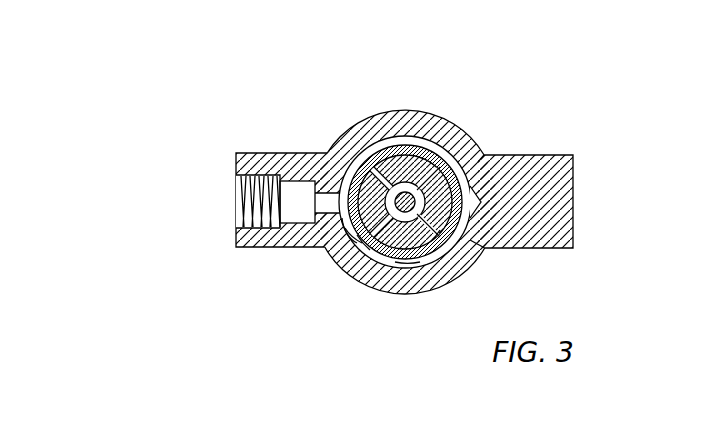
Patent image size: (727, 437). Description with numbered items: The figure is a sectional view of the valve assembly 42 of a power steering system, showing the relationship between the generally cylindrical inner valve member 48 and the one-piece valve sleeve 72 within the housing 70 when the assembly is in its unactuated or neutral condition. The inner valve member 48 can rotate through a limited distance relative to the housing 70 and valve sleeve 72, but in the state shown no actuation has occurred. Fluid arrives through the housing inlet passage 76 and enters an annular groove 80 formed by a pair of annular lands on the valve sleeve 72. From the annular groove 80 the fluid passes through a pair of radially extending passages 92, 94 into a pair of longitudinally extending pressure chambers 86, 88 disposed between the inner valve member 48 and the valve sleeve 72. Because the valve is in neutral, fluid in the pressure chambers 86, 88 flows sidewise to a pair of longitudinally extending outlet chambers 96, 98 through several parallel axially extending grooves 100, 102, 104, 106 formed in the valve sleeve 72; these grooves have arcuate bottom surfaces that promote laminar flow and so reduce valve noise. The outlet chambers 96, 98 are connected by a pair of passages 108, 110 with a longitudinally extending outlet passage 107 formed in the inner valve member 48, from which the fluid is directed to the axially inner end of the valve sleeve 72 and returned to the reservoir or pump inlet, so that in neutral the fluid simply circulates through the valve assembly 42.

The valve assembly 42 is at (173, 312).
The inner valve member 48 is at (407, 263).
The housing 70 is at (573, 232).
The valve sleeve 72 is at (461, 161).
The housing inlet passage 76 is at (318, 204).
The annular groove 80 is at (357, 243).
The pressure chamber 86 is at (487, 152).
The pressure chamber 88 is at (345, 228).
The radially extending passage 92 is at (357, 235).
The radially extending passage 94 is at (432, 158).
The outlet chamber 96 is at (422, 237).
The outlet chamber 98 is at (374, 160).
The axially extending groove 100 is at (402, 250).
The axially extending groove 102 is at (347, 176).
The axially extending groove 104 is at (405, 155).
The axially extending groove 106 is at (455, 238).
The outlet passage 107 is at (481, 202).
The passage 108 is at (431, 241).
The passage 110 is at (352, 188).